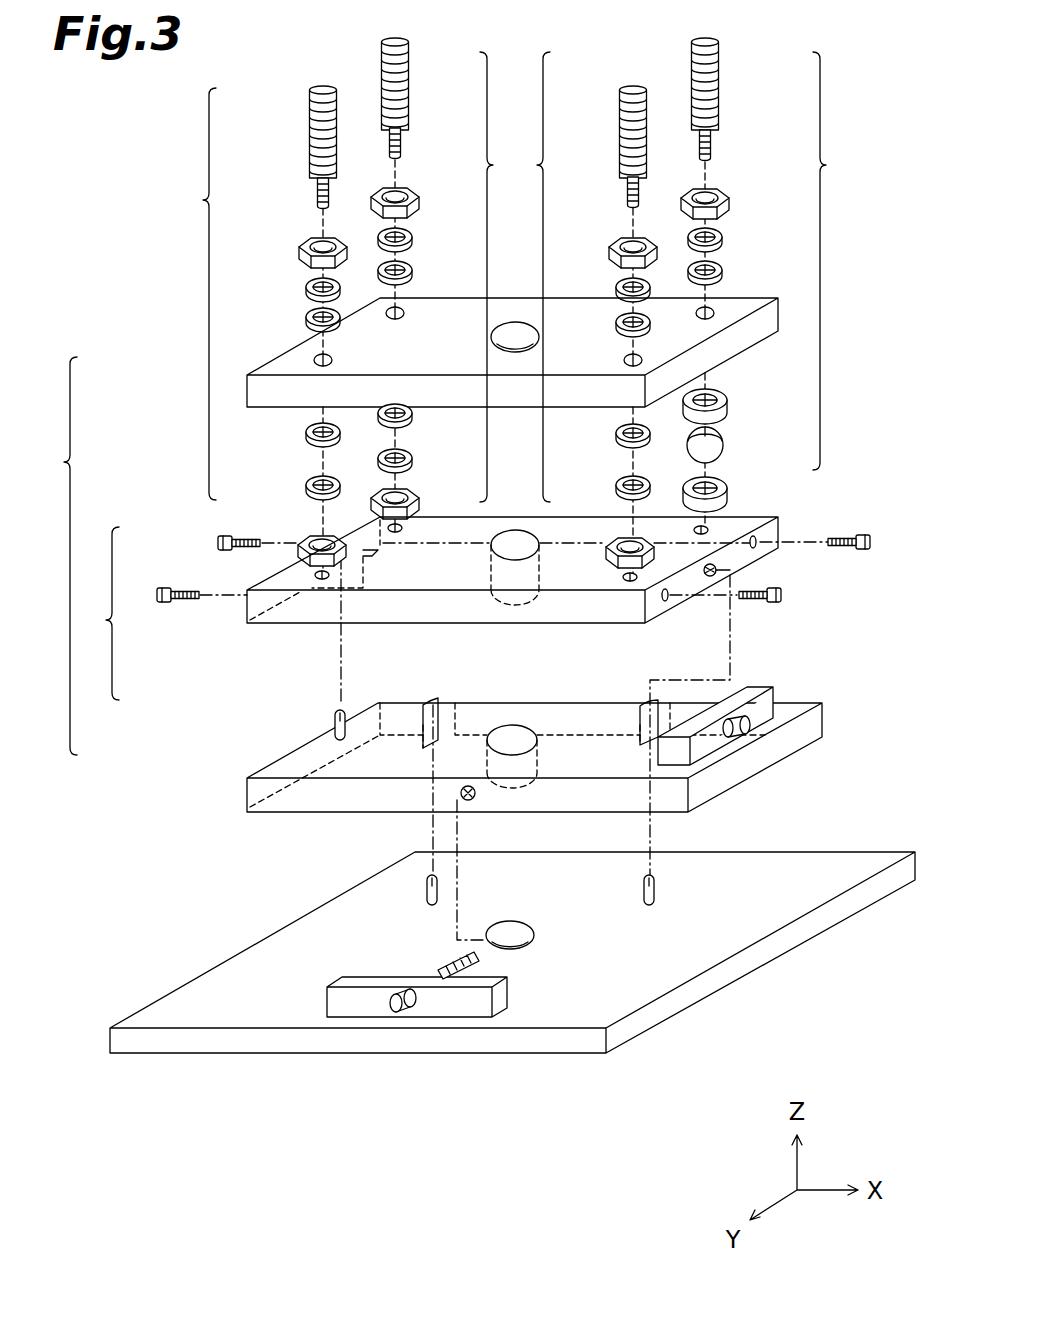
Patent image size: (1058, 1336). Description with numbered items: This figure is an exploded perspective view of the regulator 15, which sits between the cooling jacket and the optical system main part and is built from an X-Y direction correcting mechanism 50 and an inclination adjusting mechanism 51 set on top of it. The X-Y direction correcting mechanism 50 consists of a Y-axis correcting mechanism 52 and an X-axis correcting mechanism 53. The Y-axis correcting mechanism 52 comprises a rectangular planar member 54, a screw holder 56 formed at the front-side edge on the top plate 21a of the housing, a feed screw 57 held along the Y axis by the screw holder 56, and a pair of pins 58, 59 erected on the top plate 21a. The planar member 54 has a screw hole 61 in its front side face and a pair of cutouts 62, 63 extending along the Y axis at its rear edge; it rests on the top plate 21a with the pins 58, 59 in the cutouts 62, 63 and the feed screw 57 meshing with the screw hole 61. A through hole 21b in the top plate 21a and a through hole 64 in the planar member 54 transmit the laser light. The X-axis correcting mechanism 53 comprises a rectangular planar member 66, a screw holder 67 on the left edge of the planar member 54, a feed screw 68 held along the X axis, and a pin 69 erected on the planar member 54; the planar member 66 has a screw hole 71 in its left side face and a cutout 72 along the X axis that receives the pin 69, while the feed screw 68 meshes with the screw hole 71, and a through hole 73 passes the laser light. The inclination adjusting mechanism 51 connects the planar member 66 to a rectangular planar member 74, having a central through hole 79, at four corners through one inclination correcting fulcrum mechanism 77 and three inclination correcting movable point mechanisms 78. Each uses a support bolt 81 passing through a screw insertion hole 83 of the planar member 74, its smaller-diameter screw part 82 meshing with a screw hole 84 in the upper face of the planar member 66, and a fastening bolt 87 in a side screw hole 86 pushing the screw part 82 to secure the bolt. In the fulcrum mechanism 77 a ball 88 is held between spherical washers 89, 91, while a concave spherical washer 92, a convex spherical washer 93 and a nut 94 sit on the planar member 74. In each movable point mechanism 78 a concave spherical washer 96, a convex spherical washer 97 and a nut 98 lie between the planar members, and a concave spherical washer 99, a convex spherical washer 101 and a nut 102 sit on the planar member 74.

The regulator 15 is at (54, 556).
The top plate 21a is at (743, 933).
The through hole 21b is at (530, 926).
The X-Y direction correcting mechanism 50 is at (97, 613).
The inclination adjusting mechanism 51 is at (142, 387).
The Y-axis correcting mechanism 52 is at (189, 714).
The X-axis correcting mechanism 53 is at (189, 559).
The planar member 54 is at (520, 705).
The screw holder 56 is at (350, 1010).
The feed screw 57 is at (397, 1012).
The pin 58 is at (425, 890).
The pin 59 is at (655, 878).
The screw hole 61 is at (474, 800).
The cutout 62 is at (440, 700).
The cutout 63 is at (648, 708).
The through hole 64 is at (530, 746).
The planar member 66 is at (512, 520).
The screw holder 67 is at (760, 690).
The feed screw 68 is at (748, 730).
The pin 69 is at (333, 720).
The screw hole 71 is at (732, 569).
The cutout 72 is at (365, 553).
The through hole 73 is at (532, 553).
The planar member 74 is at (515, 300).
The inclination correcting fulcrum mechanism 77 is at (839, 261).
The inclination correcting movable point mechanism 78 is at (357, 277).
The through hole 79 is at (518, 350).
The support bolt 81 is at (310, 104).
The smaller-diameter screw part 82 is at (318, 195).
The screw insertion hole 83 is at (332, 359).
The screw hole 84 is at (318, 580).
The screw hole 86 is at (758, 540).
The fastening bolt 87 is at (217, 540).
The ball 88 is at (723, 450).
The spherical washer 89 is at (728, 405).
The spherical washer 91 is at (727, 490).
The concave spherical washer 92 is at (727, 268).
The convex spherical washer 93 is at (727, 232).
The nut 94 is at (727, 191).
The concave spherical washer 96 is at (307, 433).
The convex spherical washer 97 is at (307, 485).
The nut 98 is at (300, 540).
The concave spherical washer 99 is at (307, 325).
The convex spherical washer 101 is at (307, 289).
The nut 102 is at (300, 247).